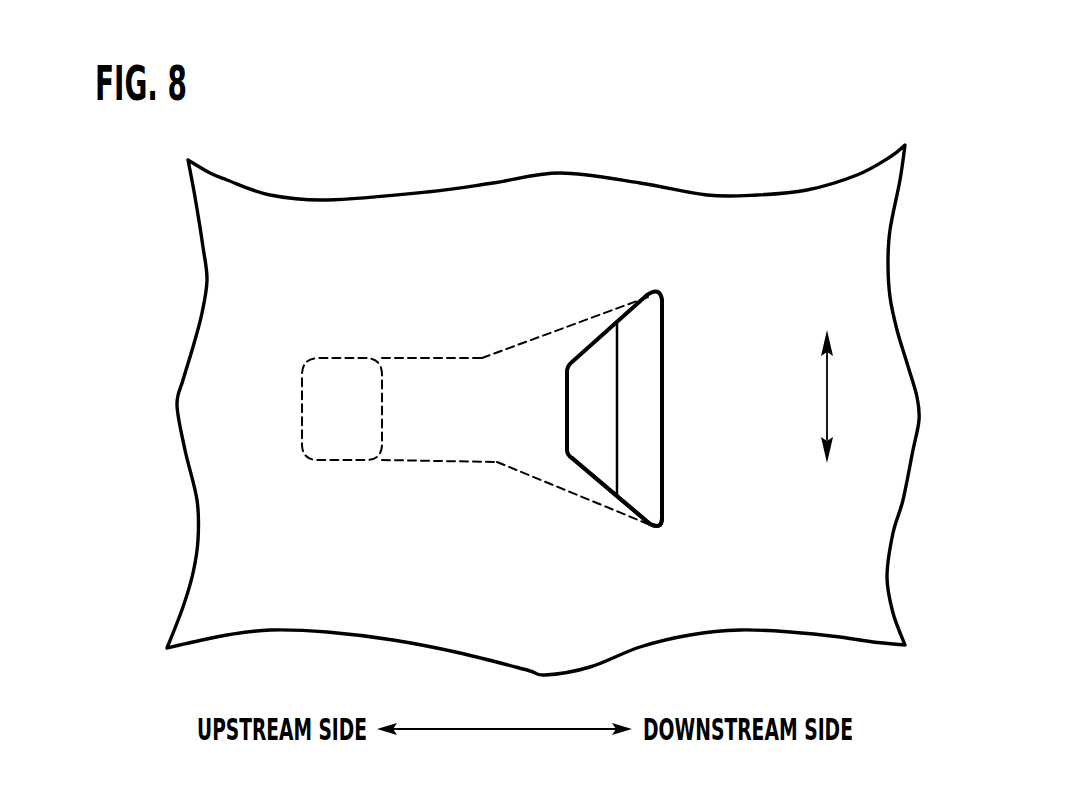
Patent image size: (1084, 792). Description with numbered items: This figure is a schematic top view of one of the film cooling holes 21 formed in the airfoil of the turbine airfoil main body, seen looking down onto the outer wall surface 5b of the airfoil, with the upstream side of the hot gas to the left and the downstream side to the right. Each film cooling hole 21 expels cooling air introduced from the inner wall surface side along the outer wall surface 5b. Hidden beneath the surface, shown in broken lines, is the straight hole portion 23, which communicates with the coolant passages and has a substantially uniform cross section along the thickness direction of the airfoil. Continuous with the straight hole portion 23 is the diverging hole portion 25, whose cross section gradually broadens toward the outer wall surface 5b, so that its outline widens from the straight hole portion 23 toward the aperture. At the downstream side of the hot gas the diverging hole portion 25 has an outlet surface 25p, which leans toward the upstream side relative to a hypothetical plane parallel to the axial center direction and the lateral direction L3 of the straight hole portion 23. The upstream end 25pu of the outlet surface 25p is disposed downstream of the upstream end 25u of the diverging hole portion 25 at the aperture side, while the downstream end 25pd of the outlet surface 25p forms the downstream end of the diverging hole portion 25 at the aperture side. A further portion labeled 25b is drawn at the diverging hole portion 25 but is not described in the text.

The outer wall surface 5b is at (533, 208).
The film cooling hole 21 is at (507, 557).
The straight hole portion 23 is at (452, 462).
The diverging hole portion 25 is at (508, 465).
The outlet surface 25p is at (633, 328).
The downstream end of the outlet surface 25pd is at (663, 325).
The upstream end of the diverging hole portion 25u is at (570, 408).
The protrusion base 25b is at (642, 460).
The upstream end of the outlet surface 25pu is at (617, 450).
The lateral direction L3 is at (827, 385).